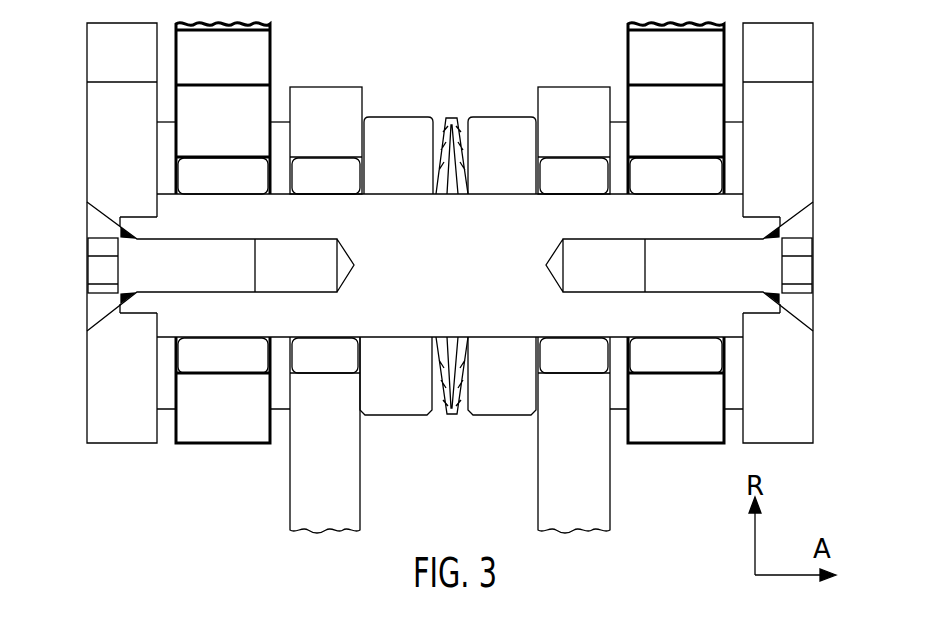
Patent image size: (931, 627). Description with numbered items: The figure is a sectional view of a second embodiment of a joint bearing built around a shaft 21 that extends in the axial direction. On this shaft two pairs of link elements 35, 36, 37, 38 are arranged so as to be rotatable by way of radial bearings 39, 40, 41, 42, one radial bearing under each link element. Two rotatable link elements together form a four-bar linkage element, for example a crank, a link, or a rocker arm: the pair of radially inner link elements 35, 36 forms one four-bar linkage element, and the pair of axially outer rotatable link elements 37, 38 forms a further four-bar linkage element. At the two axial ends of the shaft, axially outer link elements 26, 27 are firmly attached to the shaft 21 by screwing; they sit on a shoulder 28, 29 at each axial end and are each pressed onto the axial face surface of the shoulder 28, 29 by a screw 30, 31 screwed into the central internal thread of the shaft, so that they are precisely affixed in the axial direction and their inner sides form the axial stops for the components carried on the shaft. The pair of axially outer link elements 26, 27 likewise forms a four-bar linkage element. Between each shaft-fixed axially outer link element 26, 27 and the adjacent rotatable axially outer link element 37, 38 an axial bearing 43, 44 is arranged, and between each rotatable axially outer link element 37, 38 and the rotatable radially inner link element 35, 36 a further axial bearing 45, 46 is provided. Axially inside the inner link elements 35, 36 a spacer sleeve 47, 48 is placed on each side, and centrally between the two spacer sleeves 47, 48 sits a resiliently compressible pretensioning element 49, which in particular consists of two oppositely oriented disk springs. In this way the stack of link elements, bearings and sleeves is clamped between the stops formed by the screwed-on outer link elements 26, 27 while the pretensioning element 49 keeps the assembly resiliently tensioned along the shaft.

The shaft 21 is at (435, 237).
The axially outer link element 26 is at (797, 152).
The axially outer link element 27 is at (95, 146).
The shoulder 28 is at (745, 203).
The shoulder 29 is at (157, 205).
The screw 30 is at (767, 262).
The screw 31 is at (140, 270).
The link element 35 is at (555, 100).
The link element 36 is at (335, 100).
The link element 37 is at (672, 428).
The link element 38 is at (222, 432).
The radial bearing 39 is at (550, 355).
The radial bearing 40 is at (348, 355).
The radial bearing 41 is at (700, 360).
The radial bearing 42 is at (200, 360).
The axial bearing 43 is at (733, 135).
The axial bearing 44 is at (160, 133).
The axial bearing 45 is at (618, 132).
The axial bearing 46 is at (277, 132).
The spacer sleeve 47 is at (487, 128).
The spacer sleeve 48 is at (388, 137).
The pretensioning element 49 is at (451, 423).